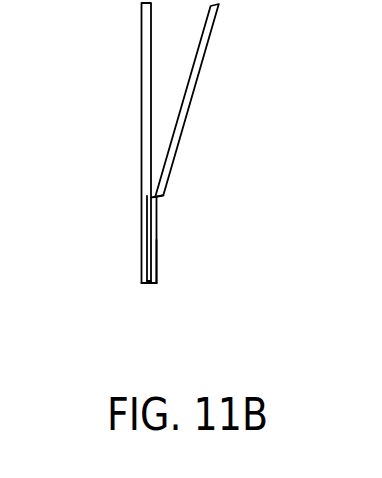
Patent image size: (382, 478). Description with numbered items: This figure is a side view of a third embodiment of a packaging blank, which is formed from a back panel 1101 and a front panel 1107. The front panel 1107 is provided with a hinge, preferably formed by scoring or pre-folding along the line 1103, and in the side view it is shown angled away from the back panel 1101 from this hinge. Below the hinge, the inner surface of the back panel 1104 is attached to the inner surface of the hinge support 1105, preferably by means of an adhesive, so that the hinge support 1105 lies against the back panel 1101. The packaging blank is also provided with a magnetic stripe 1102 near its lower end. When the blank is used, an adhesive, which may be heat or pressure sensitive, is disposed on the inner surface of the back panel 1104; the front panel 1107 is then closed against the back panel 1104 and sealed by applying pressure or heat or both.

The back panel 1101 is at (146, 284).
The magnetic stripe 1102 is at (158, 262).
The hinge line 1103 is at (157, 195).
The inner surface of the back panel 1104 is at (148, 128).
The hinge support 1105 is at (155, 242).
The front panel 1107 is at (206, 47).